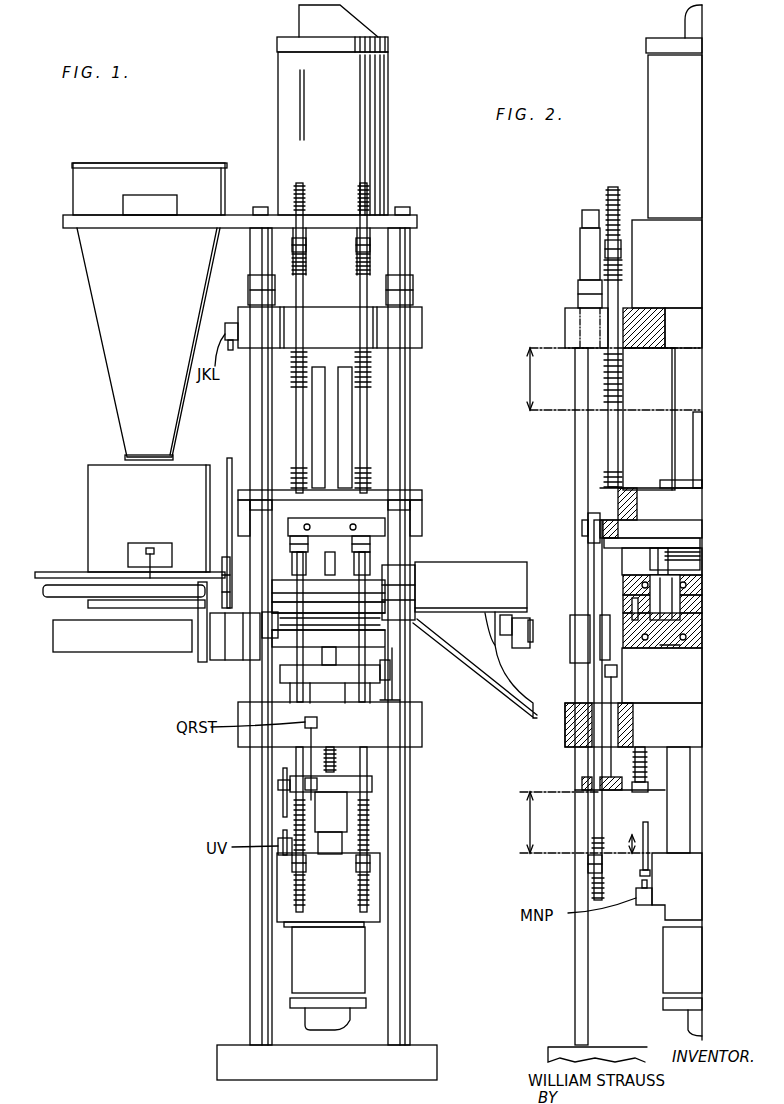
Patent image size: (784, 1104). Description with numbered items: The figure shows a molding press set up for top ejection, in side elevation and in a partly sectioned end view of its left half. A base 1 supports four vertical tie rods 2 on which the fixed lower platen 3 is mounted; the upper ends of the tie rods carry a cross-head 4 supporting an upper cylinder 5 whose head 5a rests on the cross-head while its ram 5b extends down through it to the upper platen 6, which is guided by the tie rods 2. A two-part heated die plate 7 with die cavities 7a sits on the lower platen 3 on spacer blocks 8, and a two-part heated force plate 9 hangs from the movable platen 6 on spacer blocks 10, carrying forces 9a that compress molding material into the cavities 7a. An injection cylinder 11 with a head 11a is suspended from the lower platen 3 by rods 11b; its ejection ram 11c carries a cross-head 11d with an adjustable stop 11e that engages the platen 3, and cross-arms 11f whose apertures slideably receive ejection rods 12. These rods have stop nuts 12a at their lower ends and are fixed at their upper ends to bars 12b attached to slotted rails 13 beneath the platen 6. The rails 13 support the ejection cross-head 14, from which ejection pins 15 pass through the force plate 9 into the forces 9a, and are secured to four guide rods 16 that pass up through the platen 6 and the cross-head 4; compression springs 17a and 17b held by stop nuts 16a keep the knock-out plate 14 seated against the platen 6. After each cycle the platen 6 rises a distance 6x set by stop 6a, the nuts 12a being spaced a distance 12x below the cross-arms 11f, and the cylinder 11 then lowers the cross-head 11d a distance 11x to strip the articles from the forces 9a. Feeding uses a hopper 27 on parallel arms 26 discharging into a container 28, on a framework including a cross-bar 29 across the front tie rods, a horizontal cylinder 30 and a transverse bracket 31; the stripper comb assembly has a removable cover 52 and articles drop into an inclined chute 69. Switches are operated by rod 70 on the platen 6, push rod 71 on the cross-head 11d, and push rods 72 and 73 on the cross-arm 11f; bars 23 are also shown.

In FIG. 1, the base 1 is at (232, 1045).
In FIG. 2, the base 1 is at (563, 1047).
In FIG. 1, the tie rods 2 is at (250, 911).
In FIG. 2, the tie rods 2 is at (575, 961).
In FIG. 1, the lower platen 3 is at (422, 712).
In FIG. 2, the lower platen 3 is at (568, 732).
In FIG. 1, the cross-head 4 is at (422, 322).
In FIG. 2, the cross-head 4 is at (565, 320).
In FIG. 1, the upper cylinder 5 is at (388, 105).
In FIG. 2, the upper cylinder 5 is at (650, 157).
In FIG. 2, the head 5a is at (634, 220).
In FIG. 2, the piston rod or ram 5b is at (675, 366).
In FIG. 1, the upper platen 6 is at (422, 498).
In FIG. 2, the upper platen 6 is at (645, 490).
In FIG. 2, the stop 6a is at (693, 428).
In FIG. 2, the distance 6x is at (611, 379).
In FIG. 1, the die plate 7 is at (378, 640).
In FIG. 2, the die plate 7 is at (703, 633).
In FIG. 2, the die cavities 7a is at (667, 644).
In FIG. 1, the spacer blocks 8 is at (398, 668).
In FIG. 2, the spacer blocks 8 is at (703, 695).
In FIG. 1, the force plate 9 is at (385, 598).
In FIG. 2, the force plate 9 is at (703, 583).
In FIG. 2, the forces 9a is at (703, 608).
In FIG. 1, the spacer blocks 10 is at (403, 540).
In FIG. 2, the spacer blocks 10 is at (628, 565).
In FIG. 1, the injection cylinder 11 is at (298, 950).
In FIG. 2, the injection cylinder 11 is at (668, 962).
In FIG. 1, the head 11a is at (380, 888).
In FIG. 2, the head 11a is at (656, 920).
In FIG. 2, the rods 11b is at (683, 812).
In FIG. 1, the ejection ram 11c is at (342, 840).
In FIG. 1, the cross-head 11d is at (347, 812).
In FIG. 1, the adjustable stop 11e is at (345, 760).
In FIG. 2, the adjustable stop 11e is at (645, 750).
In FIG. 1, the cross-arms 11f is at (372, 784).
In FIG. 2, the cross-arms 11f is at (582, 782).
In FIG. 2, the distance 11x is at (630, 850).
In FIG. 1, the ejection rods 12 is at (296, 756).
In FIG. 2, the ejection rods 12 is at (594, 651).
In FIG. 1, the stop nuts 12a is at (356, 866).
In FIG. 2, the stop nuts 12a is at (588, 862).
In FIG. 1, the bars 12b is at (316, 518).
In FIG. 2, the bars 12b is at (588, 530).
In FIG. 2, the distance 12x is at (585, 822).
In FIG. 2, the slotted rails 13 is at (624, 530).
In FIG. 2, the ejection cross-head 14 is at (698, 538).
In FIG. 2, the ejection pins 15 is at (703, 557).
In FIG. 1, the guide rods 16 is at (297, 411).
In FIG. 2, the guide rods 16 is at (610, 423).
In FIG. 1, the stop nuts 16a is at (356, 244).
In FIG. 2, the stop nuts 16a is at (605, 248).
In FIG. 1, the compression springs 17a is at (296, 386).
In FIG. 2, the compression springs 17a is at (604, 475).
In FIG. 1, the compression springs 17b is at (356, 266).
In FIG. 2, the compression springs 17b is at (604, 266).
In FIG. 1, the plunger bars 23 is at (330, 426).
In FIG. 1, the parallel arms 26 is at (240, 213).
In FIG. 2, the parallel arms 26 is at (580, 224).
In FIG. 1, the hopper 27 is at (108, 365).
In FIG. 1, the container 28 is at (95, 483).
In FIG. 1, the cross-bar 29 is at (236, 662).
In FIG. 1, the horizontal cylinder 30 is at (133, 652).
In FIG. 1, the transverse bracket 31 is at (200, 662).
In FIG. 1, the removable cover 52 is at (468, 565).
In FIG. 1, the inclined chute 69 is at (467, 660).
In FIG. 1, the rod 70 is at (228, 460).
In FIG. 2, the push rod 71 is at (650, 863).
In FIG. 1, the push rod 72 is at (320, 746).
In FIG. 1, the push rod 73 is at (283, 803).